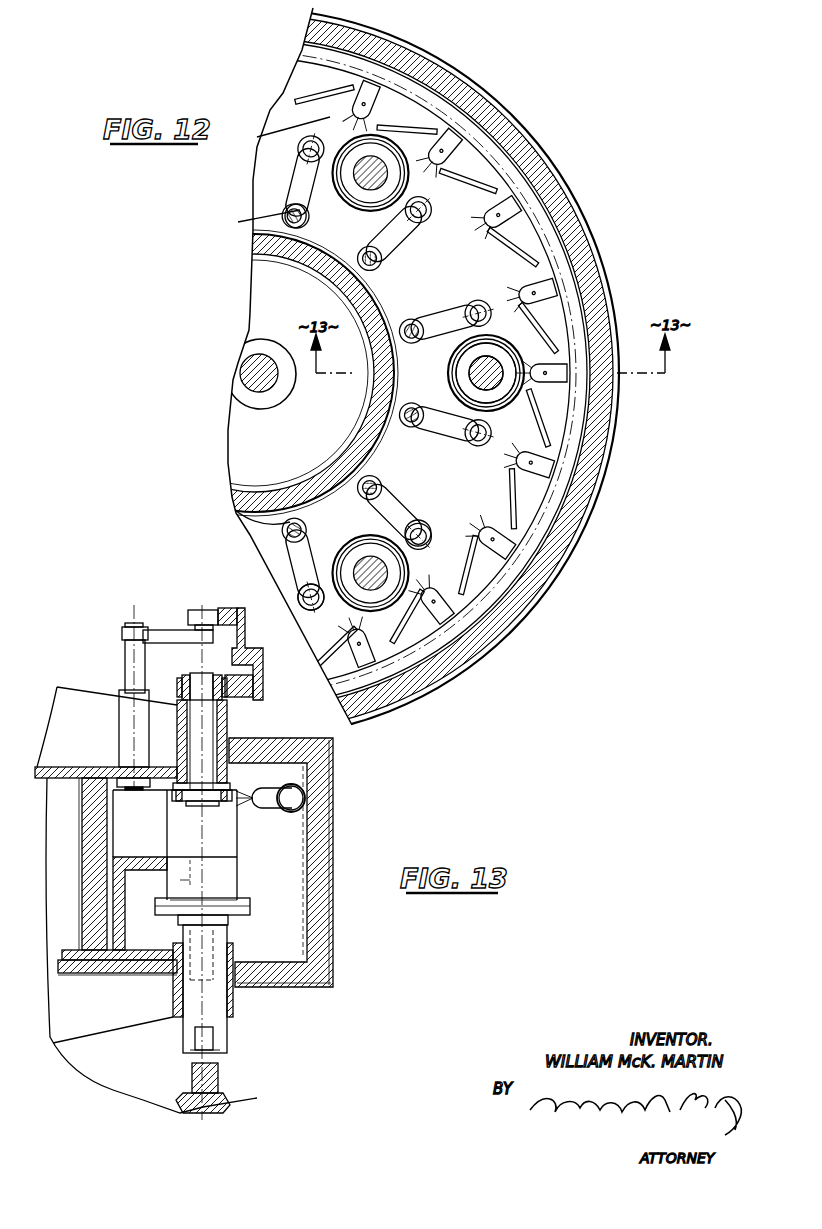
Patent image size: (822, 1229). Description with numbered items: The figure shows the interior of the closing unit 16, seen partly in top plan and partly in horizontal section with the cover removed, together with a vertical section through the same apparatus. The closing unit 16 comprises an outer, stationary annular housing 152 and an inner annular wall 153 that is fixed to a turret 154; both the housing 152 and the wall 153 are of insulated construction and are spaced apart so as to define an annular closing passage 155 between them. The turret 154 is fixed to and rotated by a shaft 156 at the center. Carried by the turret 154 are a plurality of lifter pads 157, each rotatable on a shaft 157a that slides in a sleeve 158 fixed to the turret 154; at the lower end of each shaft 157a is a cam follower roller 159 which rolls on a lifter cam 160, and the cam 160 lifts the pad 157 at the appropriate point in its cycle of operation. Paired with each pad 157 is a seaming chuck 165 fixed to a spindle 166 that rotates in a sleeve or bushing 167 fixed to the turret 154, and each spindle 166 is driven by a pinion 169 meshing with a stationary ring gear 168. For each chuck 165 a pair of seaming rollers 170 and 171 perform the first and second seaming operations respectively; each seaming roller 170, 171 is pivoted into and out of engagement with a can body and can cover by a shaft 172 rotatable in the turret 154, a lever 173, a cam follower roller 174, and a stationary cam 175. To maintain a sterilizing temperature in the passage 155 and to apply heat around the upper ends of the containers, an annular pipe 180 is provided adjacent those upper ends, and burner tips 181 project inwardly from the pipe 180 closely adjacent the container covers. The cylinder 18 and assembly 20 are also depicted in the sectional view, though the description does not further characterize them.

In FIG. 12, the closing unit 16 is at (548, 150).
In FIG. 13, the closing unit 16 is at (337, 819).
In FIG. 13, the cylinder 18 is at (240, 880).
In FIG. 12, the cylinder assembly 20 is at (460, 370).
In FIG. 13, the cylinder assembly 20 is at (167, 797).
In FIG. 12, the outer stationary annular housing 152 is at (466, 88).
In FIG. 13, the outer stationary annular housing 152 is at (325, 782).
In FIG. 13, the inner annular wall 153 is at (83, 820).
In FIG. 12, the turret 154 is at (387, 312).
In FIG. 13, the turret 154 is at (95, 750).
In FIG. 13, the annular closing passage 155 is at (276, 841).
In FIG. 12, the shaft 156 is at (240, 381).
In FIG. 13, the lifter pad 157 is at (248, 913).
In FIG. 13, the shaft 157a is at (216, 1007).
In FIG. 13, the sleeve 158 is at (240, 953).
In FIG. 13, the cam follower roller 159 is at (213, 1038).
In FIG. 13, the lifter cam 160 is at (218, 1083).
In FIG. 12, the seaming chuck 165 is at (458, 383).
In FIG. 13, the seaming chuck 165 is at (230, 801).
In FIG. 12, the spindle 166 is at (472, 368).
In FIG. 13, the spindle 166 is at (213, 737).
In FIG. 13, the sleeve or bushing 167 is at (227, 718).
In FIG. 13, the stationary ring gear 168 is at (252, 692).
In FIG. 13, the pinion 169 is at (190, 669).
In FIG. 12, the first seaming roller 170 is at (445, 510).
In FIG. 13, the first seaming roller 170 is at (190, 802).
In FIG. 12, the second seaming roller 171 is at (296, 593).
In FIG. 12, the shaft 172 is at (305, 217).
In FIG. 13, the shaft 172 is at (136, 623).
In FIG. 12, the lever 173 is at (290, 178).
In FIG. 13, the lever 173 is at (180, 614).
In FIG. 13, the cam follower roller 174 is at (206, 610).
In FIG. 13, the stationary cam 175 is at (230, 622).
In FIG. 12, the annular pipe 180 is at (508, 585).
In FIG. 13, the annular pipe 180 is at (295, 810).
In FIG. 12, the burner tip 181 is at (497, 214).
In FIG. 13, the burner tip 181 is at (277, 790).